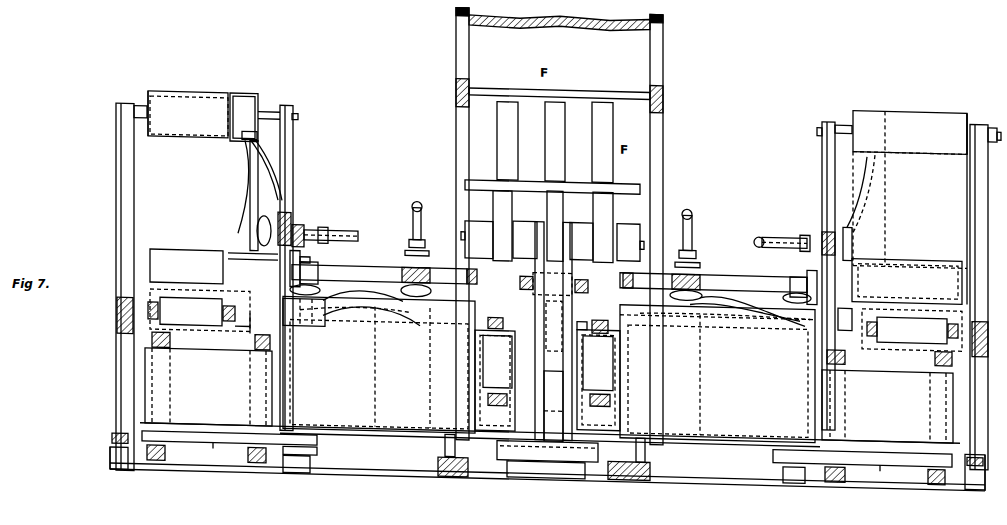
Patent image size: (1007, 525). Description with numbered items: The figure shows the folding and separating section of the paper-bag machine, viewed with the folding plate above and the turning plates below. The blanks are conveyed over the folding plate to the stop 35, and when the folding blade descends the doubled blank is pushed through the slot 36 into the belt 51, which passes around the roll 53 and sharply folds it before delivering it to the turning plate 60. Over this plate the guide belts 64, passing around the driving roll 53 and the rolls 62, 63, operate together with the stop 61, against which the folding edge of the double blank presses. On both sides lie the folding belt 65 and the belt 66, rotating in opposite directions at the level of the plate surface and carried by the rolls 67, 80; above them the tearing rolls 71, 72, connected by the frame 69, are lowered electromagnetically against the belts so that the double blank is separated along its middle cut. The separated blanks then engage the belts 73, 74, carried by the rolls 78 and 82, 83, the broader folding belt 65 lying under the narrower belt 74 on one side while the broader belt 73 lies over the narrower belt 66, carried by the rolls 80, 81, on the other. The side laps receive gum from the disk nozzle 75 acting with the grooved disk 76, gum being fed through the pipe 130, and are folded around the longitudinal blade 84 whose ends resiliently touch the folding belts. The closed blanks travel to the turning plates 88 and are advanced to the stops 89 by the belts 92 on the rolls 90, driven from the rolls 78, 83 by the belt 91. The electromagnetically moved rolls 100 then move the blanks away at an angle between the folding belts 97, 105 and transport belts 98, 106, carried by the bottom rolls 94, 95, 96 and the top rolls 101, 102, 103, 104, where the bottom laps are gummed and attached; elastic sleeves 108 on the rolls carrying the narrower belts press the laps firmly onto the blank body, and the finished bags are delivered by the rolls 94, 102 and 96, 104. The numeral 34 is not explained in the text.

The mold bars 34 is at (555, 141).
The stop 35 is at (580, 170).
The slot 36 is at (484, 87).
The belt 51 is at (553, 227).
The roll 53 is at (470, 258).
The turning plate 60 is at (620, 300).
The stop 61 is at (547, 460).
The roll 62 is at (554, 326).
The roll 63 is at (551, 406).
The guide belts 64 is at (533, 259).
The folding belt 65 is at (380, 325).
The belt 66 is at (578, 325).
The roll 67 is at (465, 463).
The frame 69 is at (488, 314).
The tearing roll 71 is at (547, 380).
The tearing roll 72 is at (529, 397).
The folding belt 73 is at (717, 376).
The belt 74 is at (379, 364).
The disk nozzle 75 is at (420, 330).
The grooved disk 76 is at (781, 331).
The roll 78 is at (312, 448).
The roll 80 is at (625, 449).
The roll 81 is at (805, 254).
The roll 82 is at (648, 440).
The roll 83 is at (790, 441).
The longitudinal blade 84 is at (258, 213).
The turning plate 88 is at (900, 470).
The stop 89 is at (555, 297).
The roll 90 is at (551, 409).
The belt 91 is at (544, 463).
The belt 92 is at (549, 395).
The roll 94 is at (263, 100).
The roll 95 is at (841, 319).
The roll 96 is at (867, 92).
The folding belt 97 is at (245, 336).
The transport belt 98 is at (885, 339).
The roll 100 is at (192, 301).
The top roll 101 is at (228, 248).
The top roll 102 is at (152, 90).
The top roll 103 is at (965, 249).
The top roll 104 is at (968, 91).
The folding belt 105 is at (917, 92).
The transport belt 106 is at (197, 90).
The elastic sleeve 108 is at (245, 90).
The pipe 130 is at (345, 221).